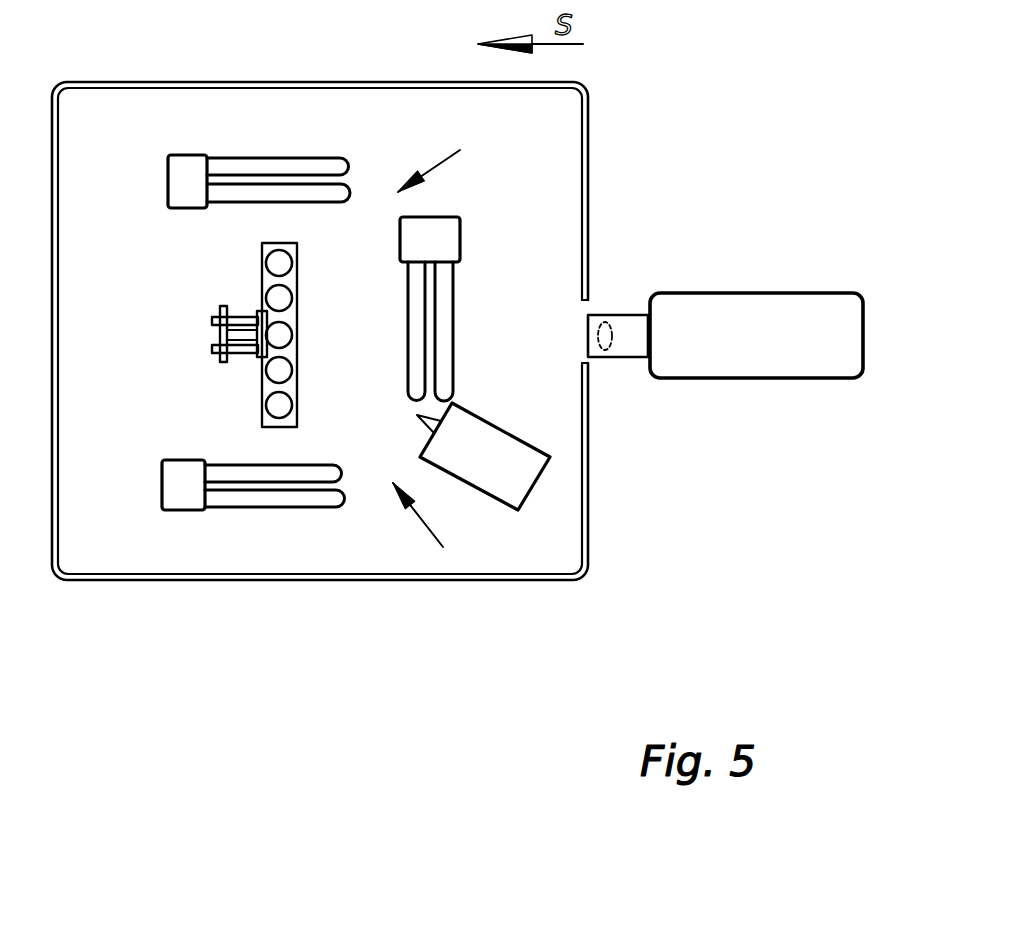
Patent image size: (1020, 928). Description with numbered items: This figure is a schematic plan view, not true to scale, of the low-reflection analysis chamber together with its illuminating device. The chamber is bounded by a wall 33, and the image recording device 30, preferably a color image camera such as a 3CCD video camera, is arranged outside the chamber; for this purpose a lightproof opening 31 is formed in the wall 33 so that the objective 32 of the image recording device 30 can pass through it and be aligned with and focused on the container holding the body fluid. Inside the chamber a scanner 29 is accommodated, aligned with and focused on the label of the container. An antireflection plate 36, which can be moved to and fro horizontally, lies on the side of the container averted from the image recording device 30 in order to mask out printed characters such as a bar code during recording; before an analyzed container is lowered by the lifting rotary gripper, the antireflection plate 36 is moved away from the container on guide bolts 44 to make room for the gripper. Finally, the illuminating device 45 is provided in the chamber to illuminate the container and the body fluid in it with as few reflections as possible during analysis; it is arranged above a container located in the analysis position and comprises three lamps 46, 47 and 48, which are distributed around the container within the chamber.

The scanner 29 is at (527, 470).
The image recording device 30 is at (828, 311).
The lightproof opening 31 is at (588, 306).
The objective 32 is at (624, 326).
The wall 33 is at (585, 137).
The antireflection plate 36 is at (255, 328).
The guide bolts 44 is at (240, 348).
The illuminating device 45 is at (448, 348).
The lamp 46 is at (188, 493).
The lamp 47 is at (188, 172).
The lamp 48 is at (442, 236).